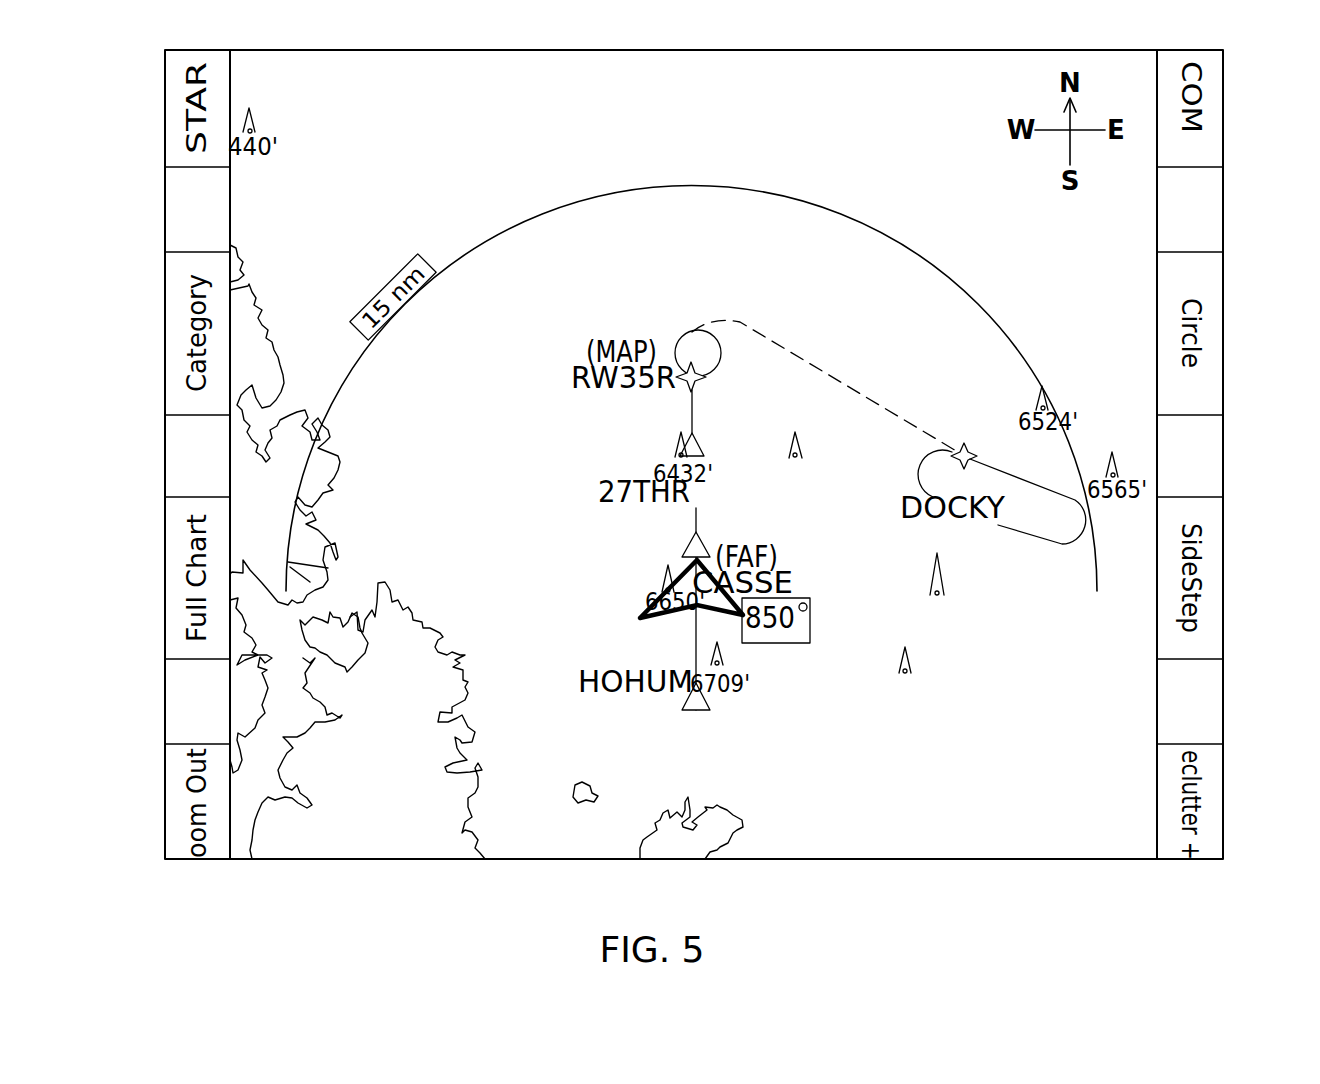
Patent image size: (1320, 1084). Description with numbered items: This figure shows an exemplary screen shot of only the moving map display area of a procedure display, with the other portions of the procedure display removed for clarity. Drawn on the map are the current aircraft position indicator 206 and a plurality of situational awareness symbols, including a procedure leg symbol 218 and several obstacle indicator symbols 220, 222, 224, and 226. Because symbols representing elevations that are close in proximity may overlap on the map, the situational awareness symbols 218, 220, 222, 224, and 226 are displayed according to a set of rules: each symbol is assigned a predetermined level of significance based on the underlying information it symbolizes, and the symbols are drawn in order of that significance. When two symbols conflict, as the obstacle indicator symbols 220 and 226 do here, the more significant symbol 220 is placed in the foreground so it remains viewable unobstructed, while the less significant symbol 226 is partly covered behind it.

The current aircraft position indicator 206 is at (640, 617).
The procedure leg symbol 218 is at (720, 517).
The obstacle indicator symbol 220 is at (942, 593).
The obstacle indicator symbol 222 is at (800, 442).
The obstacle indicator symbol 224 is at (912, 658).
The obstacle indicator symbol 226 is at (942, 567).